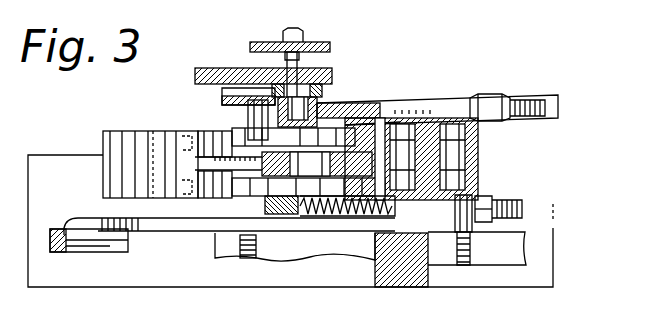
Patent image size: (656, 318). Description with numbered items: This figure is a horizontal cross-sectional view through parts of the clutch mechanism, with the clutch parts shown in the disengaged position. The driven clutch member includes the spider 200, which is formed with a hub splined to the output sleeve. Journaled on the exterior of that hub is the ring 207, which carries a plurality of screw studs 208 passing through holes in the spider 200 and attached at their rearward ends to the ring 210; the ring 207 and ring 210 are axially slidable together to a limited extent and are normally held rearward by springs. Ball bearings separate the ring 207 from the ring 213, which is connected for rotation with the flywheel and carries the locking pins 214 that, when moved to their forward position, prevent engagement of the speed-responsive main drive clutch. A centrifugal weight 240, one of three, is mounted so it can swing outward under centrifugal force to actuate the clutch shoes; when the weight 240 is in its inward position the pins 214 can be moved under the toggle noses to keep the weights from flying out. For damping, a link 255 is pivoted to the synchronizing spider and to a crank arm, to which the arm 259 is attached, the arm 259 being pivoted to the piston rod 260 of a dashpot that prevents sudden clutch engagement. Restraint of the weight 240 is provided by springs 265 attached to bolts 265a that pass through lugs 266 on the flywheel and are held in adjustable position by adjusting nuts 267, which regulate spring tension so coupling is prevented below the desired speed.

The spider 200 is at (332, 72).
The ring 207 is at (320, 92).
The screw studs 208 is at (291, 28).
The ring 210 is at (330, 45).
The ring 213 is at (240, 106).
The pins 214 is at (248, 120).
The weight 240 is at (122, 133).
The link 255 is at (281, 215).
The arm 259 is at (154, 232).
The piston rod 260 is at (74, 252).
The springs 265 is at (337, 216).
The bolts 265a is at (497, 201).
The lugs 266 is at (468, 196).
The adjusting nuts 267 is at (486, 196).